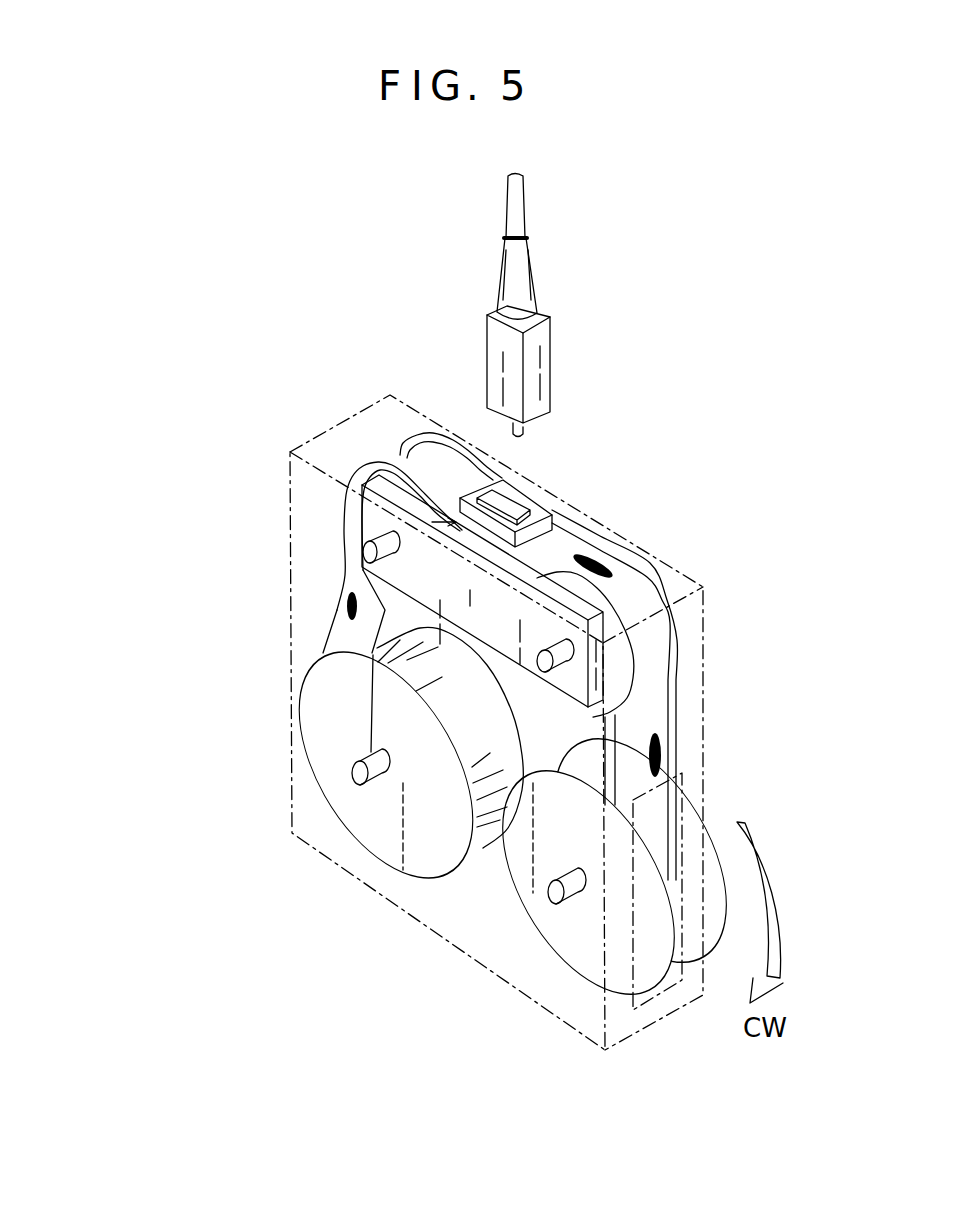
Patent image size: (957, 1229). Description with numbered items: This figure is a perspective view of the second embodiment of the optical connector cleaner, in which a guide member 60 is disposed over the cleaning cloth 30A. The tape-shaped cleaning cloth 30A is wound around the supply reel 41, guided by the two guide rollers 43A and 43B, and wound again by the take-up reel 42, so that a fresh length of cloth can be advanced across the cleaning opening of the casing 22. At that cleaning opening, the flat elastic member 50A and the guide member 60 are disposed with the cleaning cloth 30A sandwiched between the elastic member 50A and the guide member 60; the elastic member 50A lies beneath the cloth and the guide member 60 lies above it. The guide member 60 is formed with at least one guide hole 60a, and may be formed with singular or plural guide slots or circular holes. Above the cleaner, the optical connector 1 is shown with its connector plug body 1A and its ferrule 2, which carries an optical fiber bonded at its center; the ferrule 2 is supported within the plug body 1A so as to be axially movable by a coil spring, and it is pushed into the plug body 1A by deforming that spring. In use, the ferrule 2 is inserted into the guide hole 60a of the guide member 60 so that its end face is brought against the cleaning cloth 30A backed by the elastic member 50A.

The optical connector 1 is at (558, 275).
The connector plug body 1A is at (533, 358).
The ferrule 2 is at (512, 433).
The casing 22 is at (693, 585).
The cleaning cloth 30A is at (605, 560).
The supply reel 41 is at (378, 832).
The take-up reel 42 is at (580, 930).
The guide roller 43A is at (410, 447).
The guide roller 43B is at (678, 640).
The flat elastic member 50A is at (478, 537).
The guide member 60 is at (609, 483).
The guide hole 60a is at (533, 487).